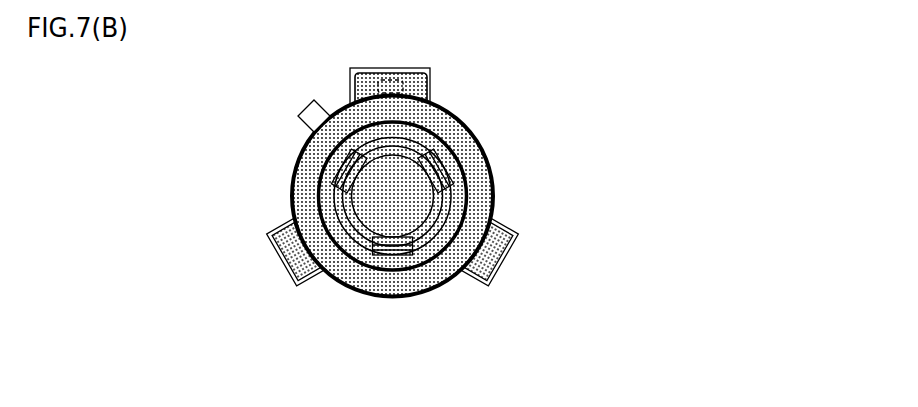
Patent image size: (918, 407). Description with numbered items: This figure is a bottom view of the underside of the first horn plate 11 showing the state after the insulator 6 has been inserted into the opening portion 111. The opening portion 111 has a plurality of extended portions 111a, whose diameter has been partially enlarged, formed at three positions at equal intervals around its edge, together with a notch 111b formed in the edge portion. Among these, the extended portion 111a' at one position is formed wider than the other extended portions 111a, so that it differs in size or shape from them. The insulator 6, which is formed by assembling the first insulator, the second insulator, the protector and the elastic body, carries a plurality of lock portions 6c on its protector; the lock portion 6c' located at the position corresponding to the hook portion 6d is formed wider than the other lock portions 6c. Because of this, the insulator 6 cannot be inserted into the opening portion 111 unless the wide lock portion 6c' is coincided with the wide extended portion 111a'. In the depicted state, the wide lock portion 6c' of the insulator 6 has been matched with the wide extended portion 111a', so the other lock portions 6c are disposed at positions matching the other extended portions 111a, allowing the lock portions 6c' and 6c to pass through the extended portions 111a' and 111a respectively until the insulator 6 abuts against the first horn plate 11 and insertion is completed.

The first horn plate 11 is at (540, 68).
The insulator 6 is at (286, 147).
The opening portion 111 is at (396, 173).
The extended portion 111a is at (396, 269).
The wide extended portion 111a' is at (407, 65).
The notch 111b is at (306, 110).
The lock portion 6c is at (392, 270).
The wide lock portion 6c' is at (412, 69).
The hook portion 6d is at (405, 86).